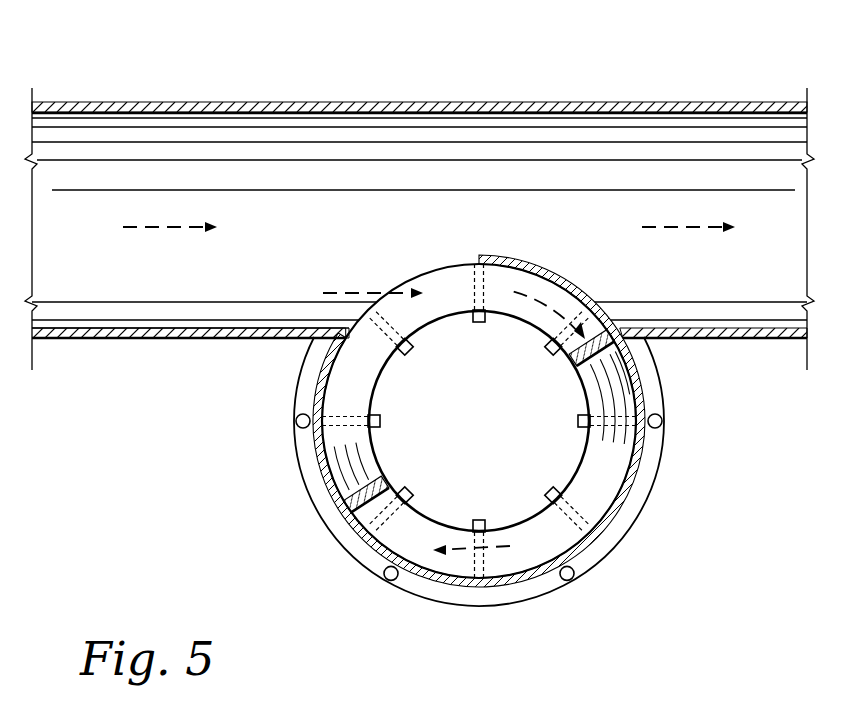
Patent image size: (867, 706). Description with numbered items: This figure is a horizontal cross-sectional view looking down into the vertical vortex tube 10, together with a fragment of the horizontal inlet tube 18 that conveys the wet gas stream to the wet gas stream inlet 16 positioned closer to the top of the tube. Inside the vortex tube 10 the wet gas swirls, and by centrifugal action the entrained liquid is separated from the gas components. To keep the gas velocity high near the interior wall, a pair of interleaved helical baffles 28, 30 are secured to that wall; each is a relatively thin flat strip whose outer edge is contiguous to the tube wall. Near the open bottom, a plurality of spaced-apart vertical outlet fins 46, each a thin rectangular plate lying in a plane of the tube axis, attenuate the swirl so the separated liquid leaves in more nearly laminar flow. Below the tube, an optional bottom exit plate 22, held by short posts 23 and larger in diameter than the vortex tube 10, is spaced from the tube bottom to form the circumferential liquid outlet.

The vortex tube 10 is at (607, 540).
The wet gas stream inlet 16 is at (478, 256).
The inlet tube 18 is at (512, 102).
The bottom exit plate 22 is at (653, 458).
The short posts 23 is at (295, 420).
The helical baffle 28 is at (347, 368).
The helical baffle 30 is at (648, 371).
The vertical outlet fins 46 is at (410, 492).